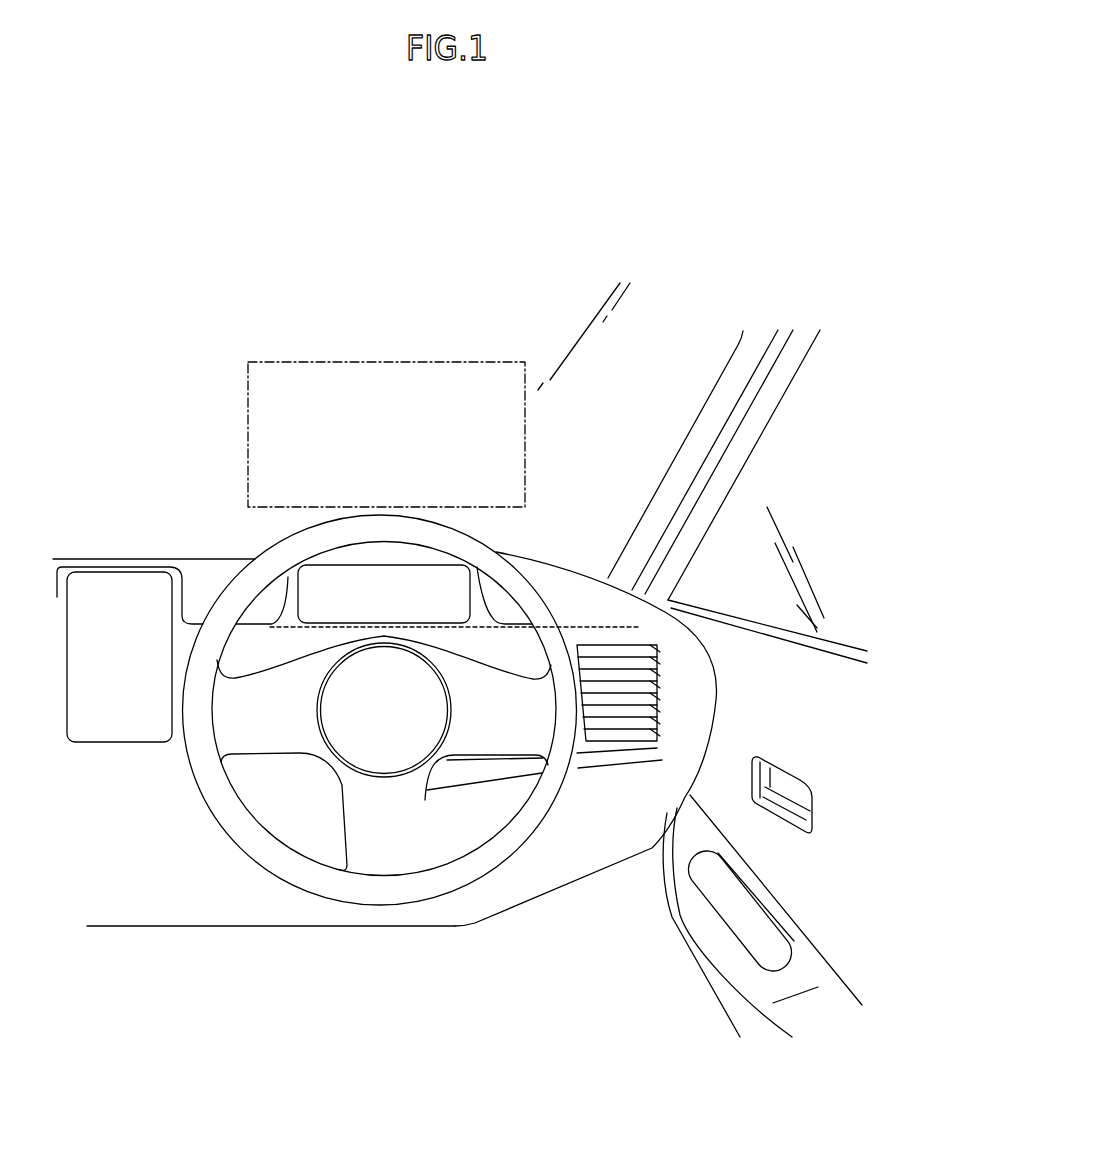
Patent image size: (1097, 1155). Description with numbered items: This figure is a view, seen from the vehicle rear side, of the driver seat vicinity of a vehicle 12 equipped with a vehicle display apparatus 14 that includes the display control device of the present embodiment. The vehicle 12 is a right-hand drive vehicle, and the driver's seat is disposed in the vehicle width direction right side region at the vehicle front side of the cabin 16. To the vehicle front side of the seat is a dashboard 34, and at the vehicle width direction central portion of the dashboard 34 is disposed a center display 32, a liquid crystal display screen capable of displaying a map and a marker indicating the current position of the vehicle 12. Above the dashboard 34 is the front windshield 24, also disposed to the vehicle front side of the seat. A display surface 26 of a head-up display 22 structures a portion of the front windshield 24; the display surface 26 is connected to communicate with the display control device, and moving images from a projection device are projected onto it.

The vehicle 12 is at (721, 123).
The vehicle display apparatus 14 is at (477, 295).
The cabin 16 is at (177, 435).
The head-up display 22 is at (386, 434).
The front windshield 24 is at (510, 168).
The display surface 26 is at (298, 360).
The center display 32 is at (122, 722).
The dashboard 34 is at (552, 578).